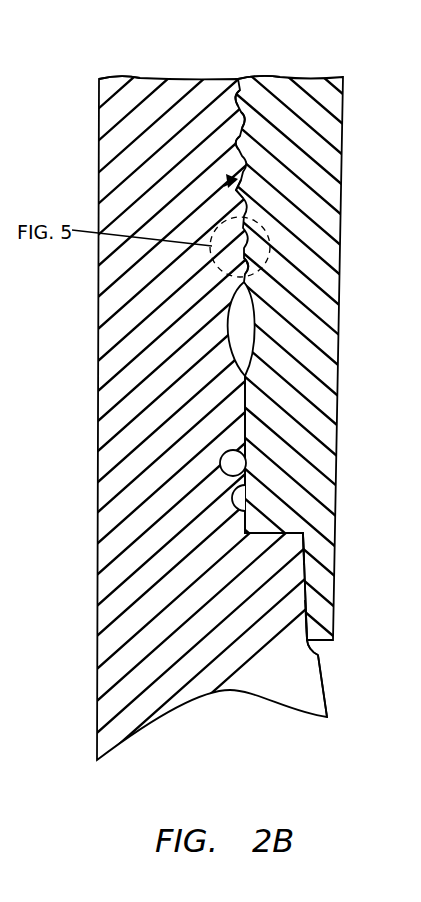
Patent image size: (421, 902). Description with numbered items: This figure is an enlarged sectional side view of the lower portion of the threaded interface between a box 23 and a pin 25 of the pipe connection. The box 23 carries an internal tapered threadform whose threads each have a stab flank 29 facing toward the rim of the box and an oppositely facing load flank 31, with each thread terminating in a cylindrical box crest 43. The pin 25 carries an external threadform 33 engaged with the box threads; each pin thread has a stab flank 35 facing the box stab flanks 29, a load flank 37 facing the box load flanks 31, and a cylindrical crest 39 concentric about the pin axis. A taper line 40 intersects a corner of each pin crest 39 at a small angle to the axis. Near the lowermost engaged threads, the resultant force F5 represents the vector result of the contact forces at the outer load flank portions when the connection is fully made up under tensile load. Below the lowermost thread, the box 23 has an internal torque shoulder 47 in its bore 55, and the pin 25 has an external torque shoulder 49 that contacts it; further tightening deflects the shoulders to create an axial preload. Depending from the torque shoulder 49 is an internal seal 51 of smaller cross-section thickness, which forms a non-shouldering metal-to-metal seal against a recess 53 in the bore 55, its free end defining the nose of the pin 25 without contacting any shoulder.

The box 23 is at (99, 200).
The pin 25 is at (320, 432).
The box stab flank 29 is at (255, 140).
The box load flank 31 is at (250, 183).
The pin external threadform 33 is at (236, 268).
The pin stab flank 35 is at (236, 106).
The pin load flank 37 is at (236, 80).
The pin crest 39 is at (245, 152).
The taper line 40 is at (236, 28).
The box crest 43 is at (250, 82).
The internal torque shoulder 47 is at (275, 530).
The external torque shoulder 49 is at (302, 548).
The internal seal 51 is at (305, 634).
The recess 53 is at (320, 655).
The bore 55 is at (325, 690).
The resultant force F5 is at (214, 181).